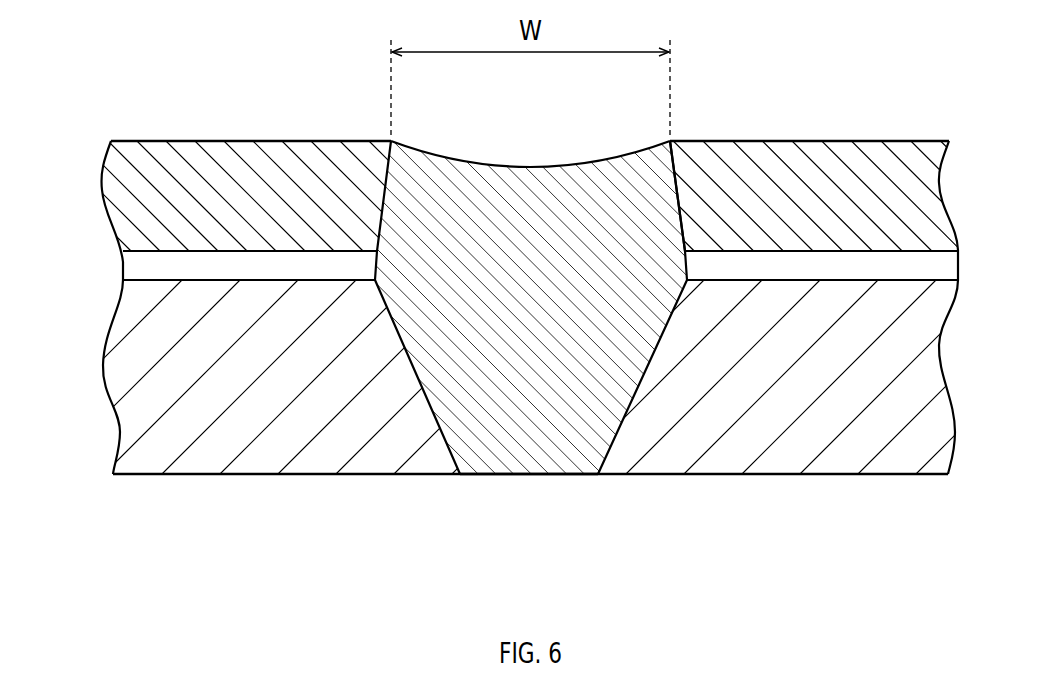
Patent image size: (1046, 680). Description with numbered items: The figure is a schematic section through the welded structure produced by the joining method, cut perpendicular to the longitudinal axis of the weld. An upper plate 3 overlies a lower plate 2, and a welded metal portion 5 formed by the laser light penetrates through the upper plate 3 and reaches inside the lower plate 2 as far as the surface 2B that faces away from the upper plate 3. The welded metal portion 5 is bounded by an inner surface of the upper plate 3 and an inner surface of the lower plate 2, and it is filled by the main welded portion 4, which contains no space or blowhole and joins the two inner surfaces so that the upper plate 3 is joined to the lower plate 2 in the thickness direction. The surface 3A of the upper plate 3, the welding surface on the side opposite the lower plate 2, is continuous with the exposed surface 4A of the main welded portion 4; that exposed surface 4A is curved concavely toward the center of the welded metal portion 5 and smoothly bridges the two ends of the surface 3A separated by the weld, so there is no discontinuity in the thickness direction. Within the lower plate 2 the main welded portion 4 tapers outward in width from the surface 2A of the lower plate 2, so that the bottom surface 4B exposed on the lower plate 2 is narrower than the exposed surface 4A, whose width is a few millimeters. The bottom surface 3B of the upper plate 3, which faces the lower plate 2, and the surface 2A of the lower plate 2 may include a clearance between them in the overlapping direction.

The lower plate 2 is at (125, 373).
The surface of the lower plate 2A is at (306, 280).
The surface of the lower plate 2B is at (240, 478).
The upper plate 3 is at (125, 196).
The surface of the upper plate 3A is at (300, 140).
The surface of the upper plate 3B is at (261, 253).
The main welded portion 4 is at (613, 373).
The exposed surface of the main welded portion 4A is at (565, 166).
The bottom surface of the main welded portion 4B is at (552, 477).
The welded metal portion 5 is at (676, 200).